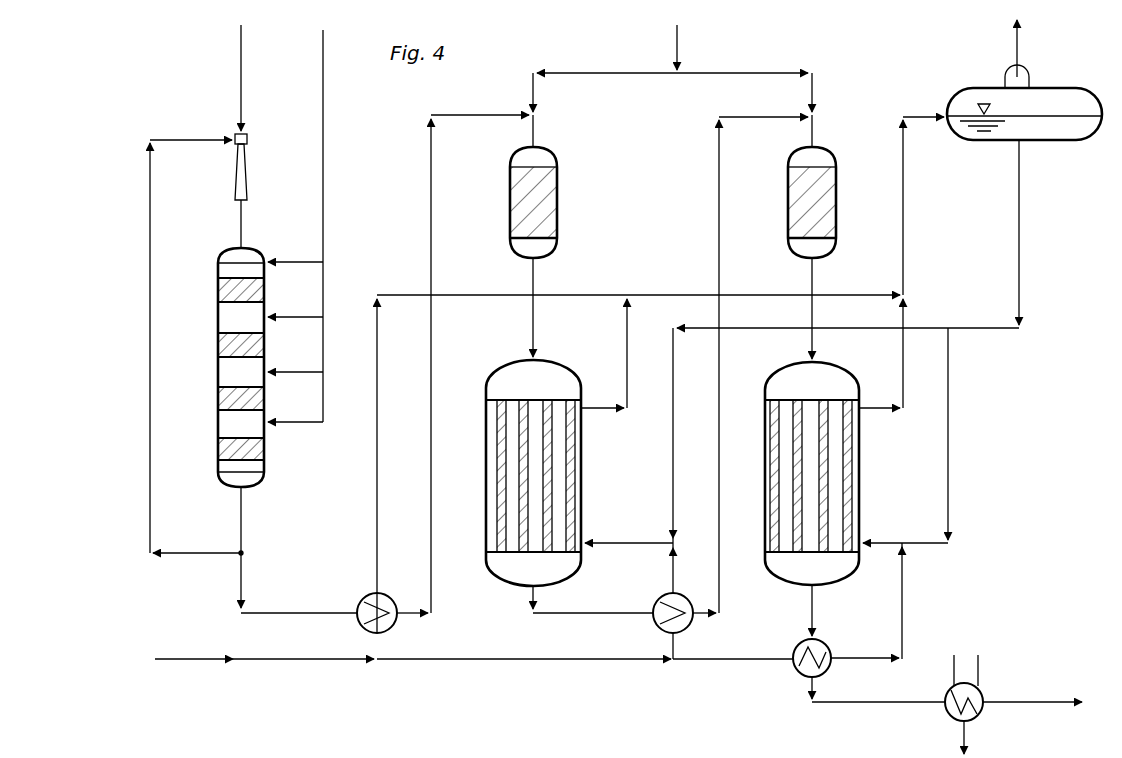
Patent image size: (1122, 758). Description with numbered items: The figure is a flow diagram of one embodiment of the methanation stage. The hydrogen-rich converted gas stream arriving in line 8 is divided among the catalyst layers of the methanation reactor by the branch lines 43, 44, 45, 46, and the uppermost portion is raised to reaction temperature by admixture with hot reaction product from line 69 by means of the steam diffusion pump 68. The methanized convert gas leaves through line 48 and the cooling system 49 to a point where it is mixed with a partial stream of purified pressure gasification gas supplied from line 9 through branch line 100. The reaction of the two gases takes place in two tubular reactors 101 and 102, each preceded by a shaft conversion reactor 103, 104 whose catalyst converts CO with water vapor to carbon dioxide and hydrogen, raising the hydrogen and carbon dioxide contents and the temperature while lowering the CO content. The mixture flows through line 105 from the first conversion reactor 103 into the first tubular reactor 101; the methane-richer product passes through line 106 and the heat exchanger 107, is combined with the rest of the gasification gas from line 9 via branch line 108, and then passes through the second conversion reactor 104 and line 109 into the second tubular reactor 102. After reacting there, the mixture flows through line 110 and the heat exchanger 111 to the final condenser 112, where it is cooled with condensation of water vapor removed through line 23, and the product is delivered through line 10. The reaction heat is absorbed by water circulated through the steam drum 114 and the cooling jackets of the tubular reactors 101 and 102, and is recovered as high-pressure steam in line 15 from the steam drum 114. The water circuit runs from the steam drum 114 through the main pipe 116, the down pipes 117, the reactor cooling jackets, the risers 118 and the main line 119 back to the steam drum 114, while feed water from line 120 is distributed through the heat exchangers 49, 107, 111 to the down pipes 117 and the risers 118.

The hydrogen-rich converted gas stream line 8 is at (332, 225).
The purified pressure gasification gas line 9 is at (686, 47).
The product gas line 10 is at (1037, 689).
The high-pressure steam line 15 is at (1033, 48).
The condensed water removal line 23 is at (949, 739).
The branch line 43 is at (295, 249).
The branch line 44 is at (295, 305).
The branch line 45 is at (295, 360).
The branch line 46 is at (295, 410).
The methanized convert gas line 48 is at (385, 364).
The cooling system 49 is at (386, 620).
The steam diffusion pump 68 is at (256, 191).
The hot reaction product line 69 is at (179, 347).
The branch line 100 is at (605, 97).
The first tubular reactor 101 is at (555, 473).
The second tubular reactor 102 is at (834, 421).
The first conversion reactor 103 is at (554, 202).
The second conversion reactor 104 is at (833, 202).
The line 105 is at (555, 307).
The line 106 is at (593, 599).
The heat exchanger 107 is at (730, 388).
The branch line 108 is at (744, 97).
The line 109 is at (848, 314).
The line 110 is at (834, 610).
The heat exchanger 111 is at (869, 670).
The final condenser 112 is at (984, 700).
The steam drum 114 is at (1024, 101).
The main pipe 116 is at (1041, 232).
The down pipes 117 is at (788, 493).
The risers 118 is at (762, 353).
The main line 119 is at (661, 375).
The feed water line 120 is at (474, 645).